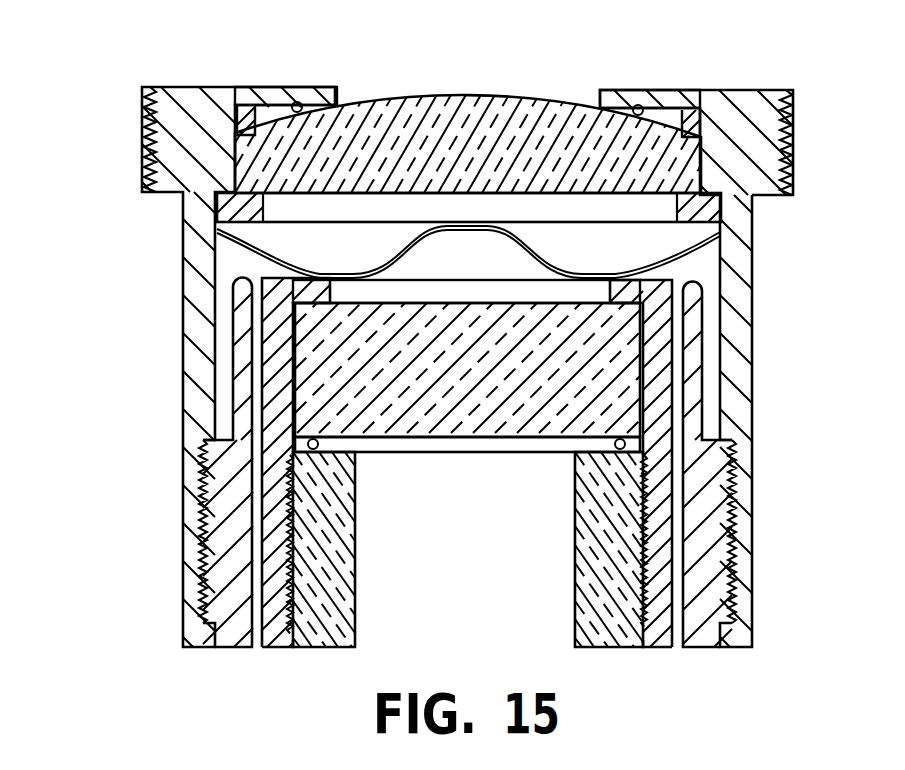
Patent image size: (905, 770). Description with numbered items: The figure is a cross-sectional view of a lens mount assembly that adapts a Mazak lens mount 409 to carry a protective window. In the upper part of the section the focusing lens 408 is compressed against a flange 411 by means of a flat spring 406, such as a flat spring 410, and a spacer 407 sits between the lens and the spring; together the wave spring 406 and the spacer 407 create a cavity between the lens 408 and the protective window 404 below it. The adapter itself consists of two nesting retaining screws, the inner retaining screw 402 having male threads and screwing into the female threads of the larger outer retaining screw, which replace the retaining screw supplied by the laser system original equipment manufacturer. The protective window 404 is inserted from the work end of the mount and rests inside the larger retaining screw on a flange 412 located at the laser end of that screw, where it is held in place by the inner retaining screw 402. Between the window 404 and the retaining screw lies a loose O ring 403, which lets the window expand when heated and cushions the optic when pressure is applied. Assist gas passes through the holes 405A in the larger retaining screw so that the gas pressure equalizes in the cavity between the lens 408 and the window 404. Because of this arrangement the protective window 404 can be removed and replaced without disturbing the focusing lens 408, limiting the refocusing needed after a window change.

The inner retaining screw 402 is at (340, 528).
The O ring 403 is at (612, 447).
The protective window 404 is at (293, 388).
The holes 405A is at (678, 648).
The flat spring 406 is at (250, 253).
The spacer 407 is at (217, 208).
The focusing lens 408 is at (443, 95).
The lens mount 409 is at (150, 127).
The flat spring 410 is at (697, 90).
The flange 411 is at (637, 88).
The flange 412 is at (292, 293).